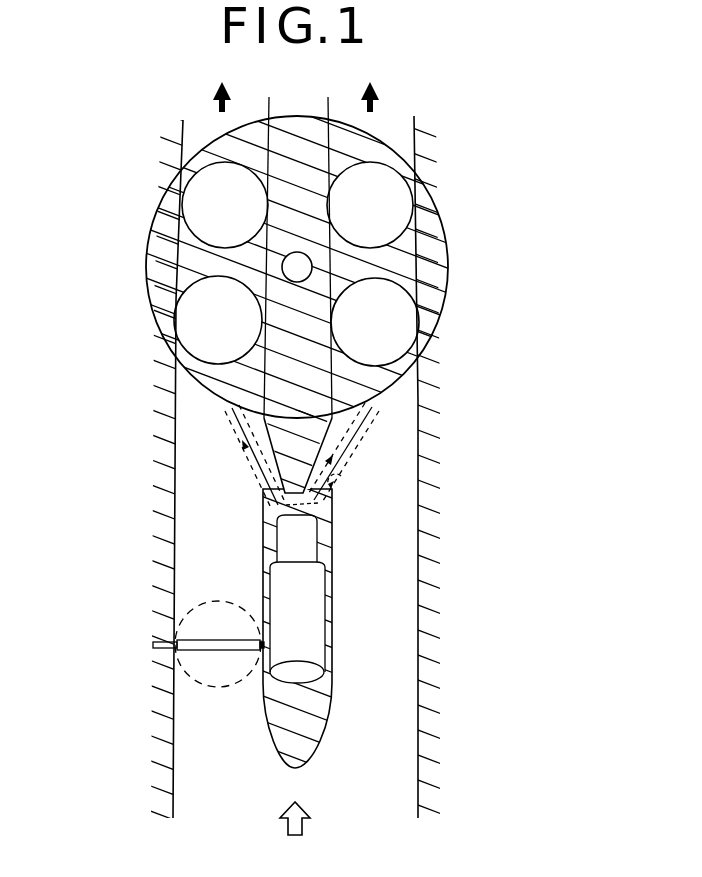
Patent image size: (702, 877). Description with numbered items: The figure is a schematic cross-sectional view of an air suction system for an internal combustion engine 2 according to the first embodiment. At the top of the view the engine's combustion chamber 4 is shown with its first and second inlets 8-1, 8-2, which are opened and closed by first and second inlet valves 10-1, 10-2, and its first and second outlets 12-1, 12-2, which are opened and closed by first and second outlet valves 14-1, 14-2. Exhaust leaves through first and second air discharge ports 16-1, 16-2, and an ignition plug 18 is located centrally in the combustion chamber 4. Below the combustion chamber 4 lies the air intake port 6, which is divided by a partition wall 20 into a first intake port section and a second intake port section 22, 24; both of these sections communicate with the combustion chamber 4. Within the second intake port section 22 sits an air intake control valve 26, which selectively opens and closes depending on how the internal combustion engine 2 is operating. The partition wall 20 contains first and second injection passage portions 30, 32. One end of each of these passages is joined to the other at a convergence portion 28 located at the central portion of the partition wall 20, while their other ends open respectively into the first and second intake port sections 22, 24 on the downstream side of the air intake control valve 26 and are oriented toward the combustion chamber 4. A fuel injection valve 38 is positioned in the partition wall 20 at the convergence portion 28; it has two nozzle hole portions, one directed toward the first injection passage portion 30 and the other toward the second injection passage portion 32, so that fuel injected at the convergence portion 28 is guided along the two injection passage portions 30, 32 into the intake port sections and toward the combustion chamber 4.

The internal combustion engine 2 is at (505, 190).
The combustion chamber 4 is at (152, 258).
The air intake port 6 is at (332, 802).
The first inlet 8-1 is at (412, 306).
The second inlet 8-2 is at (180, 300).
The first inlet valve 10-1 is at (408, 330).
The second inlet valve 10-2 is at (203, 341).
The first outlet 12-1 is at (416, 222).
The second outlet 12-2 is at (186, 216).
The first outlet valve 14-1 is at (416, 187).
The second outlet valve 14-2 is at (203, 188).
The first air discharge port 16-1 is at (413, 135).
The second air discharge port 16-2 is at (177, 130).
The ignition plug 18 is at (312, 268).
The partition wall 20 is at (330, 697).
The second intake port section 22 is at (398, 597).
The first intake port section 24 is at (193, 557).
The air intake control valve 26 is at (193, 611).
The convergence portion 28 is at (303, 511).
The first injection passage portion 30 is at (335, 504).
The second injection passage portion 32 is at (275, 503).
The fuel injection valve 38 is at (312, 643).